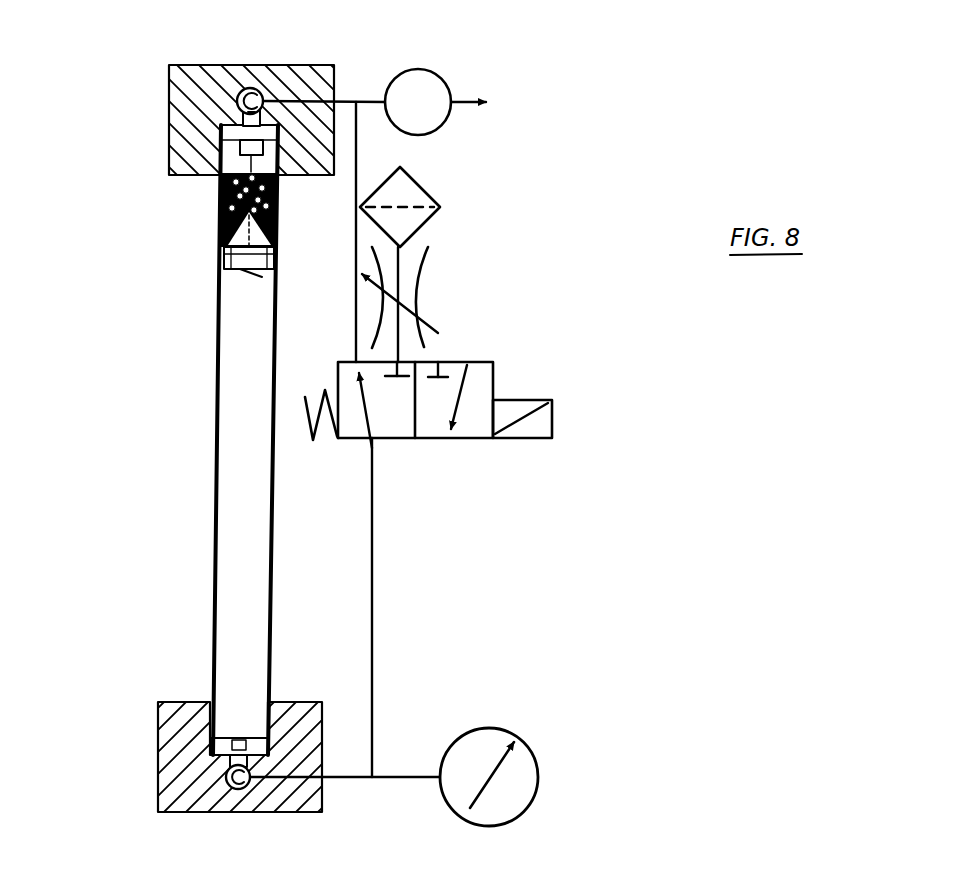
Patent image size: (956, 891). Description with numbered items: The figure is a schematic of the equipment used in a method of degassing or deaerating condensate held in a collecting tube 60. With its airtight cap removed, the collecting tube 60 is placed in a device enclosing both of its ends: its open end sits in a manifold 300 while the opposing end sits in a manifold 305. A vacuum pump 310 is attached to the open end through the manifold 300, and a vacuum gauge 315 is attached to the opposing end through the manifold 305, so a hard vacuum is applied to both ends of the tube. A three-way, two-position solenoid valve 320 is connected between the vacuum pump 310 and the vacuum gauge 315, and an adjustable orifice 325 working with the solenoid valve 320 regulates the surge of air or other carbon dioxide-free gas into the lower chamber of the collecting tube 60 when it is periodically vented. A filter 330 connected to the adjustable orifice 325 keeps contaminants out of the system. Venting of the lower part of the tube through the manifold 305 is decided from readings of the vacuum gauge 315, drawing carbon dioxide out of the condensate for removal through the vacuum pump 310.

The manifold 300 is at (168, 101).
The manifold 305 is at (158, 735).
The collecting tube 60 is at (218, 383).
The vacuum pump 310 is at (447, 78).
The vacuum gauge 315 is at (537, 758).
The three-way, two-position solenoid valve 320 is at (552, 417).
The adjustable orifice 325 is at (410, 279).
The filter 330 is at (441, 195).